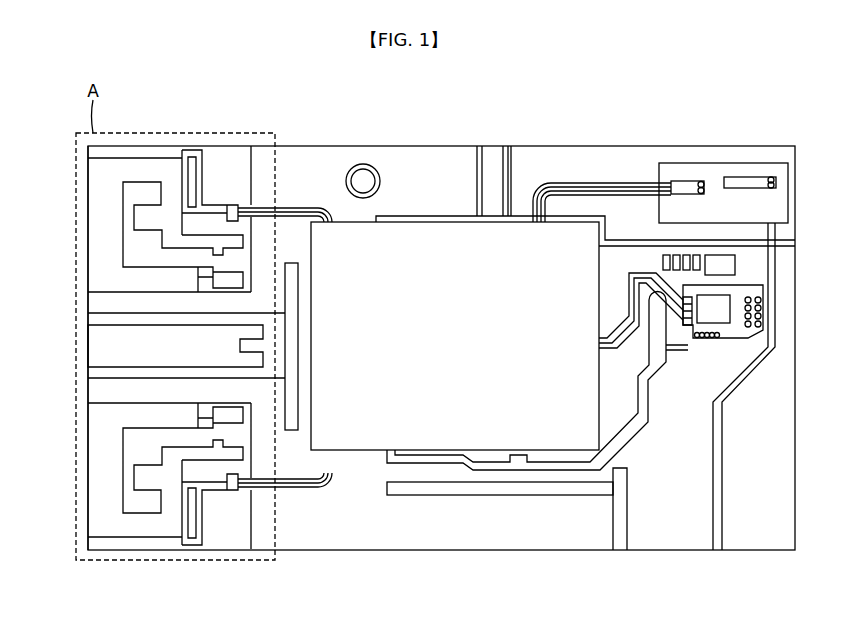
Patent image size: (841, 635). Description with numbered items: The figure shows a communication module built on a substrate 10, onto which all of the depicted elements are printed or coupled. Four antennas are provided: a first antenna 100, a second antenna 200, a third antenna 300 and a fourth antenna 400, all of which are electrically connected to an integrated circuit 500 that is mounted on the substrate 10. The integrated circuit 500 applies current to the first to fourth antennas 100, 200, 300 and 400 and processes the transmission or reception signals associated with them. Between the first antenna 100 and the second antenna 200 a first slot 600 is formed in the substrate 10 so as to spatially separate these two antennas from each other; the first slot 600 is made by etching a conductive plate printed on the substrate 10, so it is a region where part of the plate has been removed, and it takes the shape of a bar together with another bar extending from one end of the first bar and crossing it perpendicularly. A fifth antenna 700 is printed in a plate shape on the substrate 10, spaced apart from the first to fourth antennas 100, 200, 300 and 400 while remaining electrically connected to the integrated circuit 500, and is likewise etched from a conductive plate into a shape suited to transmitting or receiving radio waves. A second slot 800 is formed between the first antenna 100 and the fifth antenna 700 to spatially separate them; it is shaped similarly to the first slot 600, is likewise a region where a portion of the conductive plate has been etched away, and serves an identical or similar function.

The substrate 10 is at (136, 138).
The first antenna 100 is at (228, 210).
The second antenna 200 is at (228, 485).
The third antenna 300 is at (185, 186).
The fourth antenna 400 is at (185, 506).
The integrated circuit 500 is at (360, 438).
The first slot 600 is at (133, 372).
The fifth antenna 700 is at (745, 183).
The second slot 800 is at (505, 170).